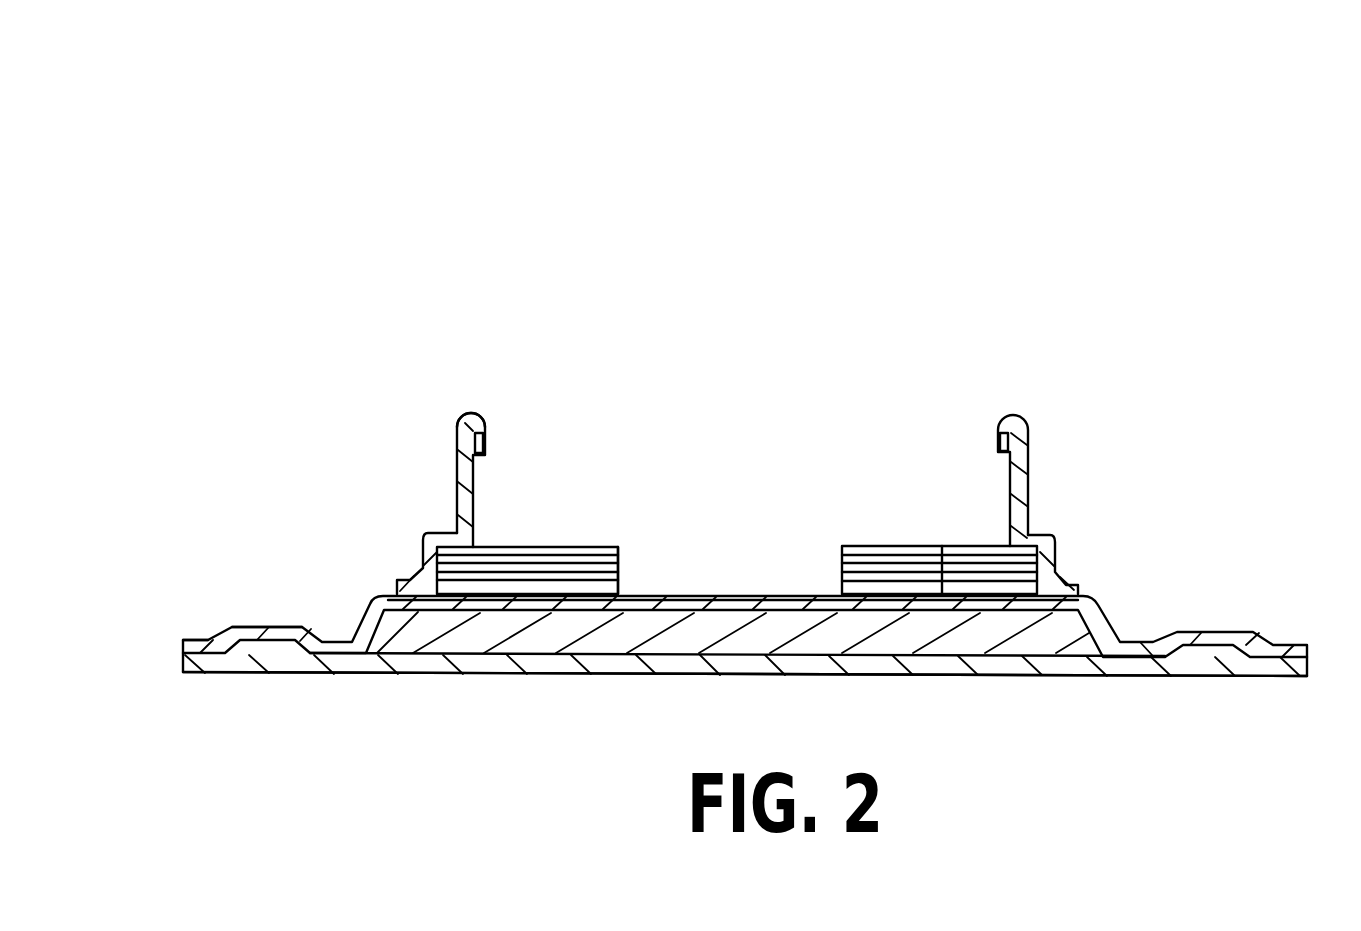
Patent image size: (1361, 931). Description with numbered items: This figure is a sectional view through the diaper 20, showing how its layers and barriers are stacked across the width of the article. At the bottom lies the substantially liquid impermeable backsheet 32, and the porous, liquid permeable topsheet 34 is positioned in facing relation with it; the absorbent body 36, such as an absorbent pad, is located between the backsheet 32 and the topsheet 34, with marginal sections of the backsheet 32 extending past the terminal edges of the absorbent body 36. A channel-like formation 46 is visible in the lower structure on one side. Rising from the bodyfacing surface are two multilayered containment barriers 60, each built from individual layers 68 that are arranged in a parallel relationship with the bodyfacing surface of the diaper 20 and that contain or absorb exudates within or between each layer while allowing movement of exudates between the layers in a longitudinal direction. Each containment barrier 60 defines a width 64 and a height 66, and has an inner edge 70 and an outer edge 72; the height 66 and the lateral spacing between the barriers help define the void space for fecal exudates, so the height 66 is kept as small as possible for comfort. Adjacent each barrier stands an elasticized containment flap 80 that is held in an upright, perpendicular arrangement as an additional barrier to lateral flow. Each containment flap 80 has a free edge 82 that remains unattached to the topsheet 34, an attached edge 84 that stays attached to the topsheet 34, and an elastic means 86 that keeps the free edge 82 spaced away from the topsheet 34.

The diaper 20 is at (273, 141).
The backsheet 32 is at (1183, 676).
The topsheet 34 is at (193, 636).
The absorbent body 36 is at (430, 673).
The channel in base 46 is at (273, 648).
The containment barrier 60 is at (525, 545).
The width 64 is at (842, 340).
The height 66 is at (1057, 550).
The layers 68 is at (842, 547).
The inner edge 70 is at (622, 546).
The outer edge 72 is at (412, 543).
The containment flap 80 is at (455, 433).
The free edge 82 is at (473, 410).
The attached edge 84 is at (1068, 585).
The elastic means 86 is at (487, 437).